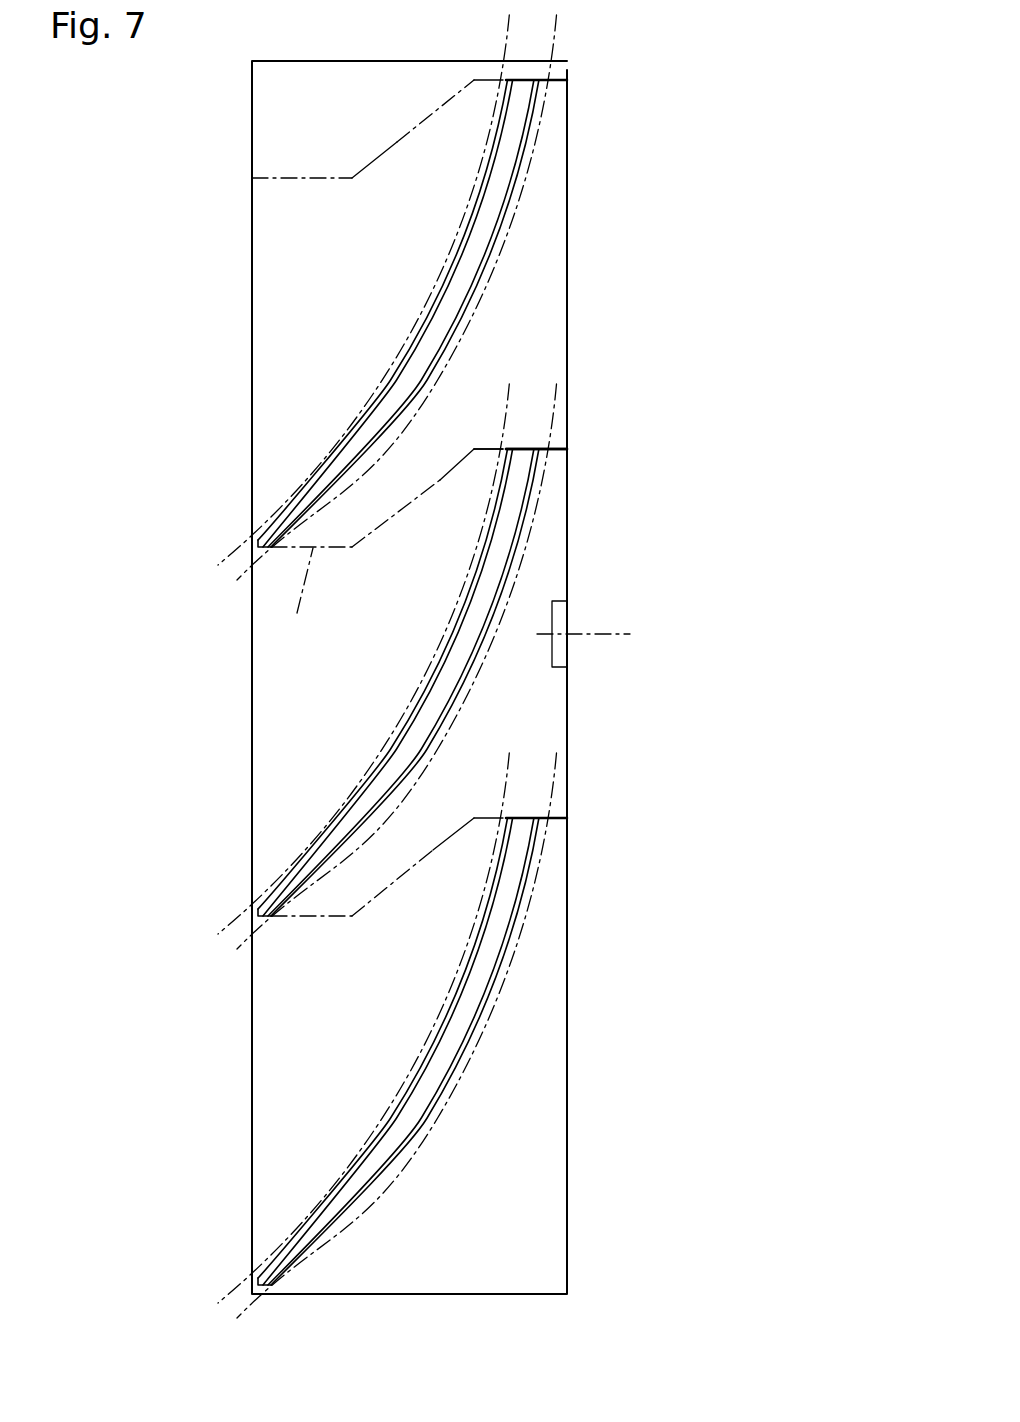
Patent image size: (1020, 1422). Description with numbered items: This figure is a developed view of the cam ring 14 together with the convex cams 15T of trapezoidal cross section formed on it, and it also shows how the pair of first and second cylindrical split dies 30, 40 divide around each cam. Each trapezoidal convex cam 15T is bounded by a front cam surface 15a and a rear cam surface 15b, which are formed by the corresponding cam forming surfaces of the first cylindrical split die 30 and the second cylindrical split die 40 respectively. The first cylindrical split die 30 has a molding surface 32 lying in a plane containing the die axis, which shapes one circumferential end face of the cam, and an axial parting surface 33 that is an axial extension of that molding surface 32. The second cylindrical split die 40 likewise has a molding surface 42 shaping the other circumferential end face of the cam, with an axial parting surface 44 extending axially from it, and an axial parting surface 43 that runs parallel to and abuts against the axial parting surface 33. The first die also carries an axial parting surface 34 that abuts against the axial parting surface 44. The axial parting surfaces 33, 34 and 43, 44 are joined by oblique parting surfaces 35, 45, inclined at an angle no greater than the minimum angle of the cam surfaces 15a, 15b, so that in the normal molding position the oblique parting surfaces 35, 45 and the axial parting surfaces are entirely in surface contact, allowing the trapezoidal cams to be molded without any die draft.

The cam ring 14 is at (373, 87).
The trapezoidal convex cam 15T is at (503, 182).
The front cam surface 15a is at (468, 236).
The rear cam surface 15b is at (495, 266).
The first cylindrical split die 30 is at (287, 320).
The second cylindrical split die 40 is at (533, 348).
The axial parting surface 34 is at (592, 410).
The axial parting surface 44 is at (487, 450).
The molding surface 42 is at (520, 450).
The oblique parting surface 35 is at (540, 499).
The oblique parting surface 45 is at (440, 480).
The molding surface 32 is at (258, 551).
The axial parting surface 43 is at (246, 642).
The axial parting surface 33 is at (297, 613).